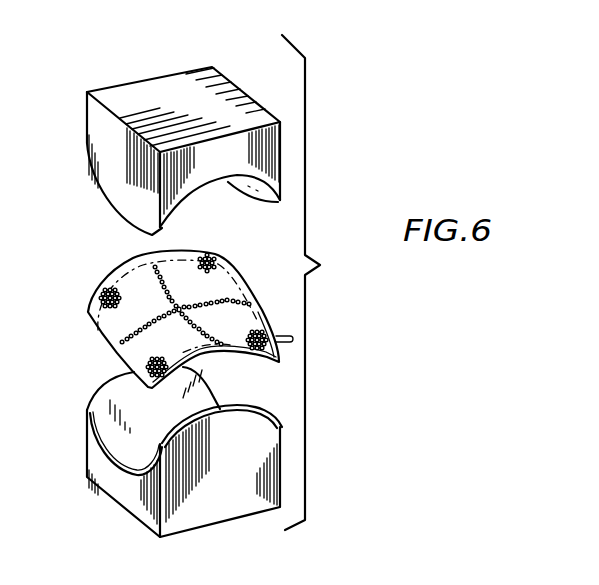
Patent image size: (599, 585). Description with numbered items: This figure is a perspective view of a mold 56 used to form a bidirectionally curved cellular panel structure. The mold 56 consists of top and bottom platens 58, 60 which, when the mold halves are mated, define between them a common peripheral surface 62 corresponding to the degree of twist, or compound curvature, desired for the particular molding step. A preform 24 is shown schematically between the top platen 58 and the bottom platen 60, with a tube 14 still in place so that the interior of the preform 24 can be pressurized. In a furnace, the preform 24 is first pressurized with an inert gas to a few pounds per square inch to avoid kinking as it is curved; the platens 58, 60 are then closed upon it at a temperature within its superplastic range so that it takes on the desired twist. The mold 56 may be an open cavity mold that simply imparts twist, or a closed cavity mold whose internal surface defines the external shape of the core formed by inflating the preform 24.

The tube 14 is at (293, 340).
The preform 24 is at (240, 278).
The mold 56 is at (326, 282).
The top platen 58 is at (100, 150).
The bottom platen 60 is at (90, 467).
The common peripheral surface 62 is at (273, 204).